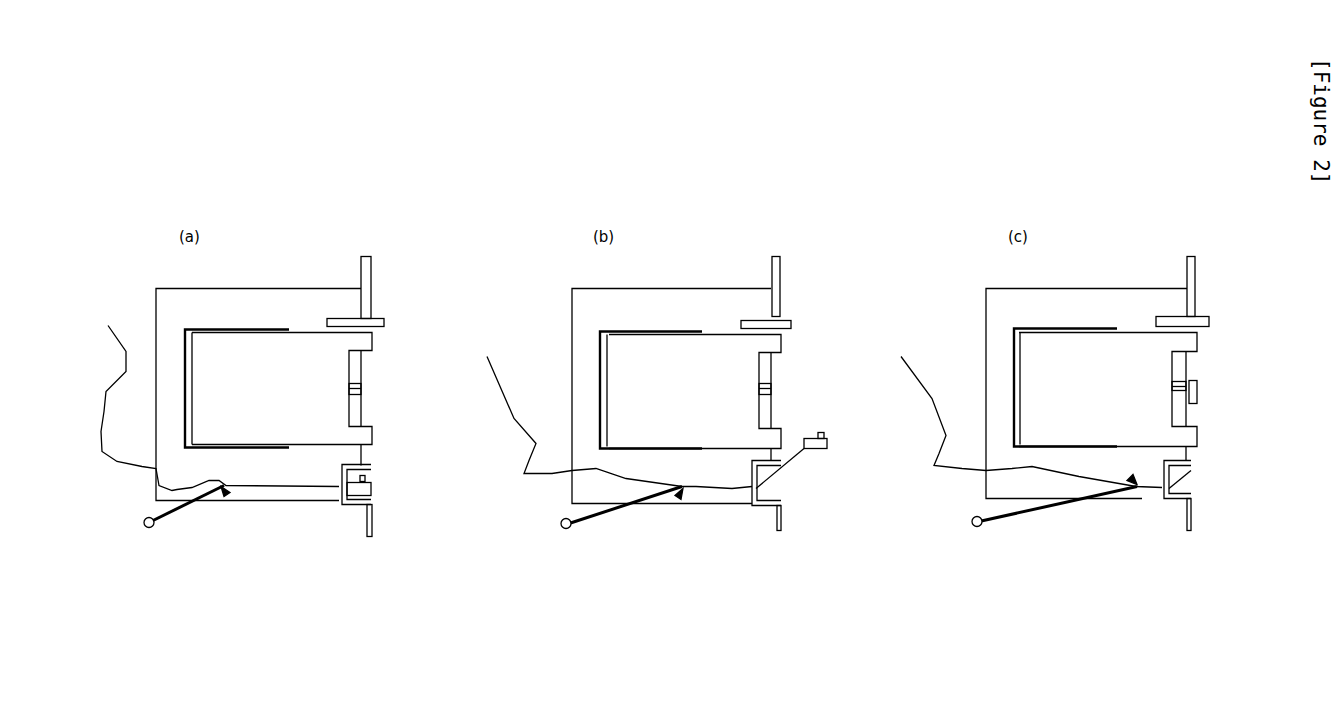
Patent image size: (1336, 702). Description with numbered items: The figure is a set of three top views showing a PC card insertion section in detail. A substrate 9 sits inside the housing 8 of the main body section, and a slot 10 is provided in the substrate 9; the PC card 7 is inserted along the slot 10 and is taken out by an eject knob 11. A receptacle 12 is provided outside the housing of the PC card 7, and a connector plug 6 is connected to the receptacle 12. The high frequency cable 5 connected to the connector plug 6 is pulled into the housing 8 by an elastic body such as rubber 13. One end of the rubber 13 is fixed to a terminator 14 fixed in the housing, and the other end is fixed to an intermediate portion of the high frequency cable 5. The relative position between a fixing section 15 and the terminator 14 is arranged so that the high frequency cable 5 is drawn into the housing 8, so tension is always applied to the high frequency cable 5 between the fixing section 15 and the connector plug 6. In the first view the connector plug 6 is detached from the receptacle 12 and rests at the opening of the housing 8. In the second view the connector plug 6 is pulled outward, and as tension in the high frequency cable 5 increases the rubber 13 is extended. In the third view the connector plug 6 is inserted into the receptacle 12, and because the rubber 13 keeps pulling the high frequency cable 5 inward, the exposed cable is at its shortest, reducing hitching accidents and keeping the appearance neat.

In FIG. 2A, the high frequency cable 5 is at (103, 453).
In FIG. 2B, the high frequency cable 5 is at (538, 448).
In FIG. 2C, the high frequency cable 5 is at (942, 438).
In FIG. 2A, the connector plug 6 is at (373, 490).
In FIG. 2B, the connector plug 6 is at (818, 453).
In FIG. 2C, the connector plug 6 is at (1199, 396).
In FIG. 2A, the PC card 7 is at (310, 345).
In FIG. 2B, the PC card 7 is at (721, 347).
In FIG. 2C, the PC card 7 is at (1133, 345).
In FIG. 2A, the housing 8 is at (371, 281).
In FIG. 2B, the housing 8 is at (781, 282).
In FIG. 2C, the housing 8 is at (1197, 281).
In FIG. 2A, the substrate 9 is at (270, 303).
In FIG. 2B, the substrate 9 is at (683, 305).
In FIG. 2C, the substrate 9 is at (1095, 305).
In FIG. 2A, the slot 10 is at (222, 328).
In FIG. 2B, the slot 10 is at (635, 332).
In FIG. 2C, the slot 10 is at (1048, 330).
In FIG. 2A, the eject knob 11 is at (386, 323).
In FIG. 2B, the eject knob 11 is at (793, 323).
In FIG. 2C, the eject knob 11 is at (1211, 323).
In FIG. 2A, the receptacle 12 is at (363, 391).
In FIG. 2B, the receptacle 12 is at (774, 392).
In FIG. 2C, the receptacle 12 is at (1178, 388).
In FIG. 2A, the rubber 13 is at (172, 510).
In FIG. 2B, the rubber 13 is at (590, 523).
In FIG. 2C, the rubber 13 is at (1037, 512).
In FIG. 2A, the terminator 14 is at (149, 525).
In FIG. 2B, the terminator 14 is at (565, 530).
In FIG. 2C, the terminator 14 is at (975, 528).
In FIG. 2A, the fixing section 15 is at (227, 498).
In FIG. 2B, the fixing section 15 is at (677, 503).
In FIG. 2C, the fixing section 15 is at (1133, 482).